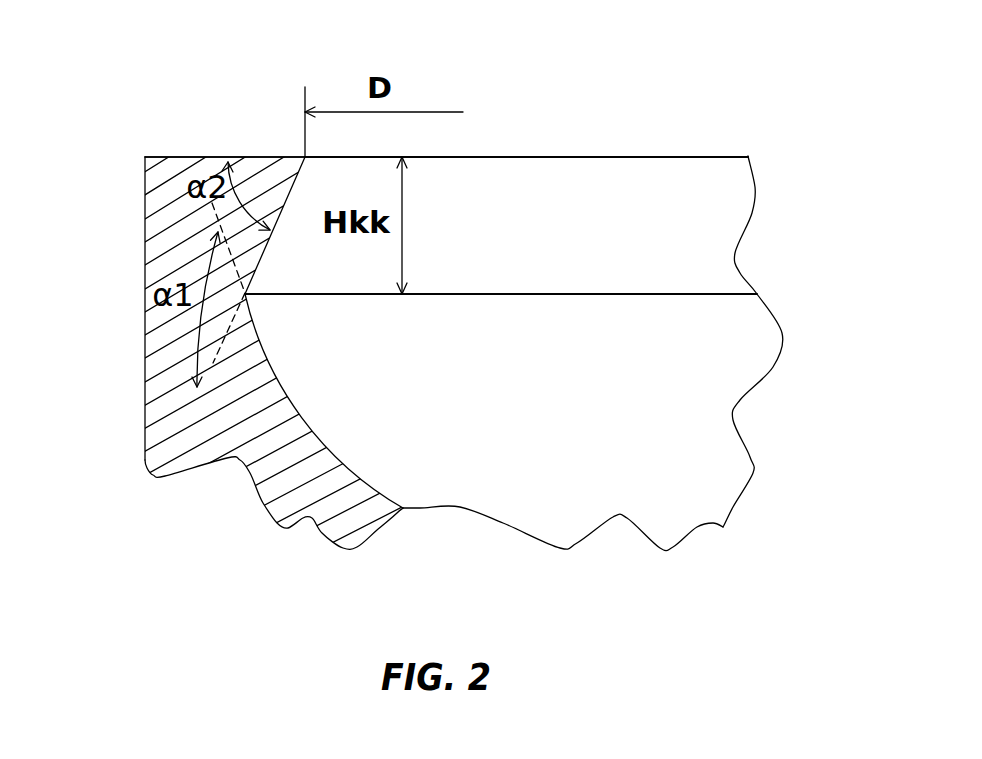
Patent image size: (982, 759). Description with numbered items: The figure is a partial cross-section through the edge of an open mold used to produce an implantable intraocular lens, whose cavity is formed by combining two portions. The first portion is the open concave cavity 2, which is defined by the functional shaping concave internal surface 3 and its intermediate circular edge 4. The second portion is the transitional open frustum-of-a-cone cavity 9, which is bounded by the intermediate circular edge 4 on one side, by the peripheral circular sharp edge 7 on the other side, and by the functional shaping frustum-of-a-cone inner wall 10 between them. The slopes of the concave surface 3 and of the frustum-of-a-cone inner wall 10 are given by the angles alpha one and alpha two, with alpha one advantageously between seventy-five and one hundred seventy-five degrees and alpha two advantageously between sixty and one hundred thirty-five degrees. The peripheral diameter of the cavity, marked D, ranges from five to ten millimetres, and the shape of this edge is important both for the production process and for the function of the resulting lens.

The open concave cavity 2 is at (522, 393).
The functional shaping concave internal surface 3 is at (293, 404).
The intermediate circular edge 4 is at (525, 293).
The peripheral circular sharp edge 7 is at (470, 156).
The transitional open frustum-of-a-cone cavity 9 is at (462, 243).
The functional shaping frustum-of-a-cone inner wall 10 is at (290, 190).